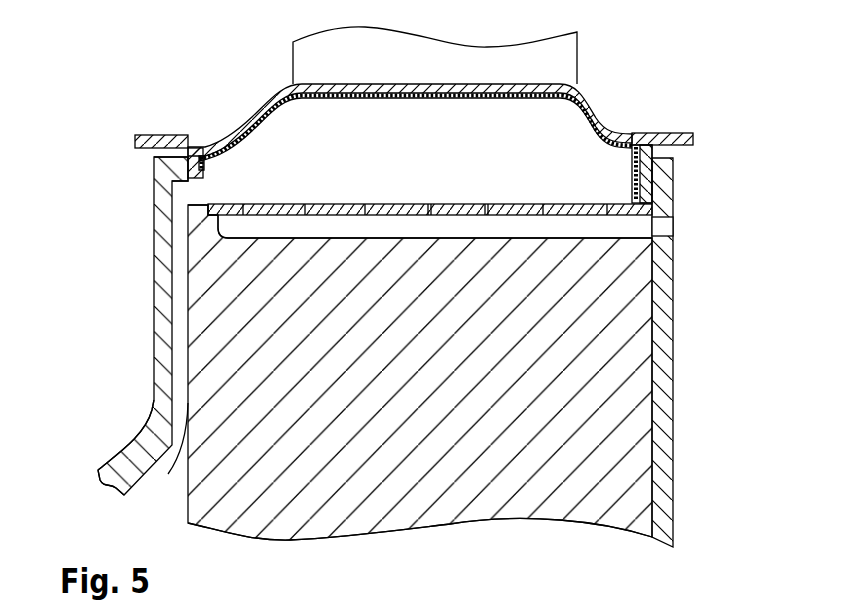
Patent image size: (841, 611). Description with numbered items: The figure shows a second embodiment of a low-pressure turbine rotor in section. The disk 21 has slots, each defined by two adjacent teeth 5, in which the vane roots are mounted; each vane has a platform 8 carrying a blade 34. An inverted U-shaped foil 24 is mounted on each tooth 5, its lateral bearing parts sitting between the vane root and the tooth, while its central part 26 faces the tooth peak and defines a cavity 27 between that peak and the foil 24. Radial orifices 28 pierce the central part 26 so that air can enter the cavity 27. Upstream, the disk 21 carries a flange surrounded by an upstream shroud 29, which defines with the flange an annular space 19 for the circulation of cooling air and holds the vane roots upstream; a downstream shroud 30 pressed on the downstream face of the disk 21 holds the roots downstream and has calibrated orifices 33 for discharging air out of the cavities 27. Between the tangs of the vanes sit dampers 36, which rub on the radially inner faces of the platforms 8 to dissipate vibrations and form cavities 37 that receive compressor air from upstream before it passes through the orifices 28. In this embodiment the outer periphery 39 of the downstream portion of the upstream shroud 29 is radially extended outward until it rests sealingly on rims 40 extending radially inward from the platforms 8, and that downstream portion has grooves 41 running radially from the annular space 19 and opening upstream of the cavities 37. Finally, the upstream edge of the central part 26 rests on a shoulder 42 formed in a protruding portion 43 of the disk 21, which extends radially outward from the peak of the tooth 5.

The tooth 5 is at (413, 392).
The platform 8 is at (414, 131).
The annular space 19 is at (142, 447).
The disk 21 is at (427, 495).
The foil 24 is at (448, 208).
The central part 26 is at (515, 208).
The cavity 27 is at (600, 230).
The radial orifices 28 is at (430, 171).
The upstream shroud 29 is at (125, 446).
The downstream shroud 30 is at (703, 352).
The calibrated orifices 33 is at (663, 226).
The blade 34 is at (545, 62).
The dampers 36 is at (612, 128).
The cavities 37 is at (281, 163).
The outer periphery 39 is at (186, 166).
The rims 40 is at (195, 162).
The grooves 41 is at (135, 326).
The shoulder 42 is at (216, 248).
The protruding portion 43 is at (198, 219).